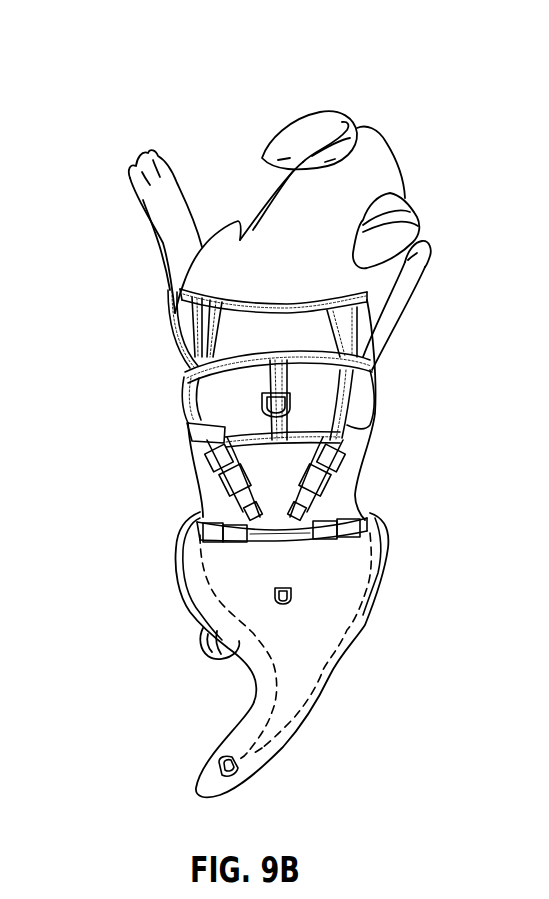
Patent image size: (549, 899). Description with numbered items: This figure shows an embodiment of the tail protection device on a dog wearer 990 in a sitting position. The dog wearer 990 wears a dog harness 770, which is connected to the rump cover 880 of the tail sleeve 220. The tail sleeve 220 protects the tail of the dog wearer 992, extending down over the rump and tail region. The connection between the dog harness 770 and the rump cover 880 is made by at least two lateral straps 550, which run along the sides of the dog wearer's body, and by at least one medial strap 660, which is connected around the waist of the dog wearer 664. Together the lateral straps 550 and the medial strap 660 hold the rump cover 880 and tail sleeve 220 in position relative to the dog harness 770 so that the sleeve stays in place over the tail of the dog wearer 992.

The dog wearer 990 is at (266, 97).
The dog harness 770 is at (372, 373).
The lateral straps 550 is at (214, 498).
The medial strap 660 is at (202, 512).
The waist of the dog wearer 664 is at (196, 524).
The rump cover 880 is at (333, 570).
The tail sleeve 220 is at (340, 670).
The tail of the dog wearer 992 is at (257, 728).